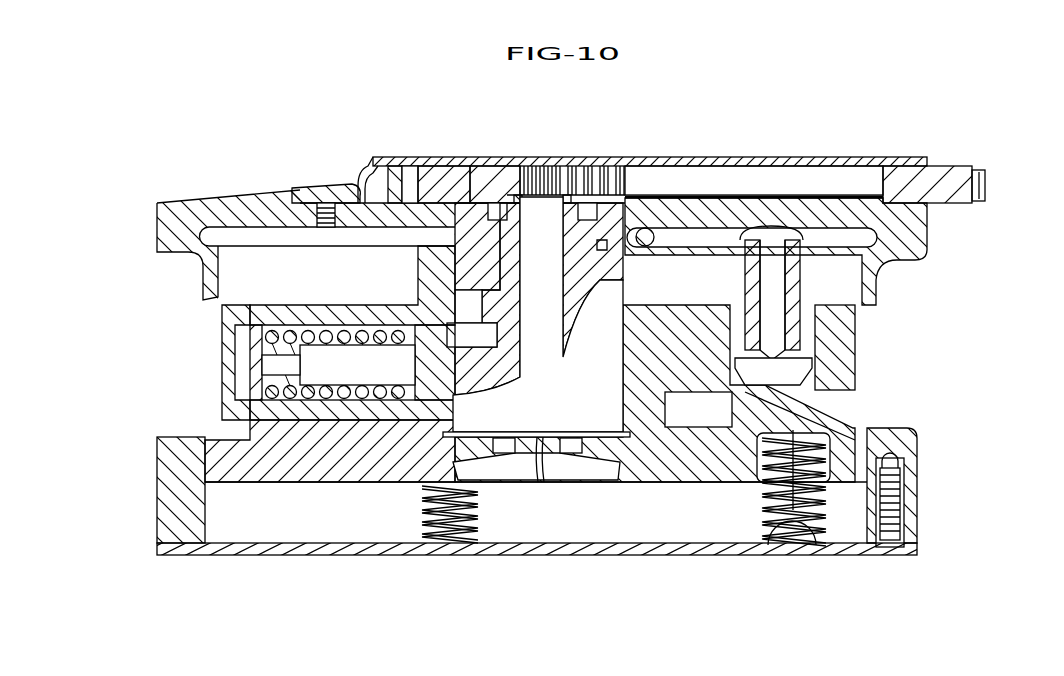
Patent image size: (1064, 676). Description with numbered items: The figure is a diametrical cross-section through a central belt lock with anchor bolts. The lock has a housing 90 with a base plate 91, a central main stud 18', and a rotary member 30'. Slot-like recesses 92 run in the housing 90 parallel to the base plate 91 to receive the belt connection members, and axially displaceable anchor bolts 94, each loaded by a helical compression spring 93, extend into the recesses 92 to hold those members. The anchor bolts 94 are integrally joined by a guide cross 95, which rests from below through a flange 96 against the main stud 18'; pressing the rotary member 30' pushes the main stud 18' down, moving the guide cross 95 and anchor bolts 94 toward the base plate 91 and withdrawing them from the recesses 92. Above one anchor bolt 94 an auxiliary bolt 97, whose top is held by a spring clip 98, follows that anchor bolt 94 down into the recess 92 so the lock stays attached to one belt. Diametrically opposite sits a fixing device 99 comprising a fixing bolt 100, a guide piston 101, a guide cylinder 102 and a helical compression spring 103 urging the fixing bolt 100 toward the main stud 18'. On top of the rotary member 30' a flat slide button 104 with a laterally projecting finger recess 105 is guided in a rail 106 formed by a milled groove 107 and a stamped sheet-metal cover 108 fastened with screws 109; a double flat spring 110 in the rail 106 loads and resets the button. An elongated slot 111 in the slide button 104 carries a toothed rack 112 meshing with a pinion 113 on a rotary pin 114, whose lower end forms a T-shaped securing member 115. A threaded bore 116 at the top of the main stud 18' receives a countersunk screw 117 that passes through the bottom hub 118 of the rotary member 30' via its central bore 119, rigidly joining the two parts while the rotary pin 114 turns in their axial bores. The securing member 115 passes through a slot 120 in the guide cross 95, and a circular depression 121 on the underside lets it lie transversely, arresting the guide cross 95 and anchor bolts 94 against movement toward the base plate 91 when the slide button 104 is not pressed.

The rotary member 30' is at (306, 225).
The main stud 18' is at (536, 317).
The housing 90 is at (168, 500).
The base plate 91 is at (228, 551).
The slot-like recesses 92 is at (706, 420).
The helical compression spring 93 is at (763, 520).
The anchor bolts 94 is at (806, 395).
The guide cross 95 is at (688, 466).
The flange 96 is at (540, 437).
The auxiliary bolt 97 is at (806, 343).
The spring clip 98 is at (683, 236).
The fixing device 99 is at (216, 357).
The fixing bolt 100 is at (492, 353).
The guide piston 101 is at (425, 388).
The guide cylinder 102 is at (318, 406).
The helical compression spring 103 is at (268, 380).
The slide button 104 is at (503, 172).
The finger recess 105 is at (986, 181).
The rail 106 is at (766, 130).
The groove 107 is at (344, 186).
The sheet-metal cover 108 is at (421, 163).
The screws 109 is at (333, 196).
The double flat spring 110 is at (386, 172).
The elongated slot 111 is at (801, 175).
The toothed rack 112 is at (606, 168).
The pinion 113 is at (548, 168).
The rotary pin 114 is at (572, 291).
The securing member 115 is at (578, 470).
The threaded bore 116 is at (507, 282).
The countersunk screw 117 is at (473, 208).
The hub 118 is at (447, 237).
The central bore 119 is at (600, 245).
The slot 120 is at (503, 452).
The circular depression 121 is at (620, 468).